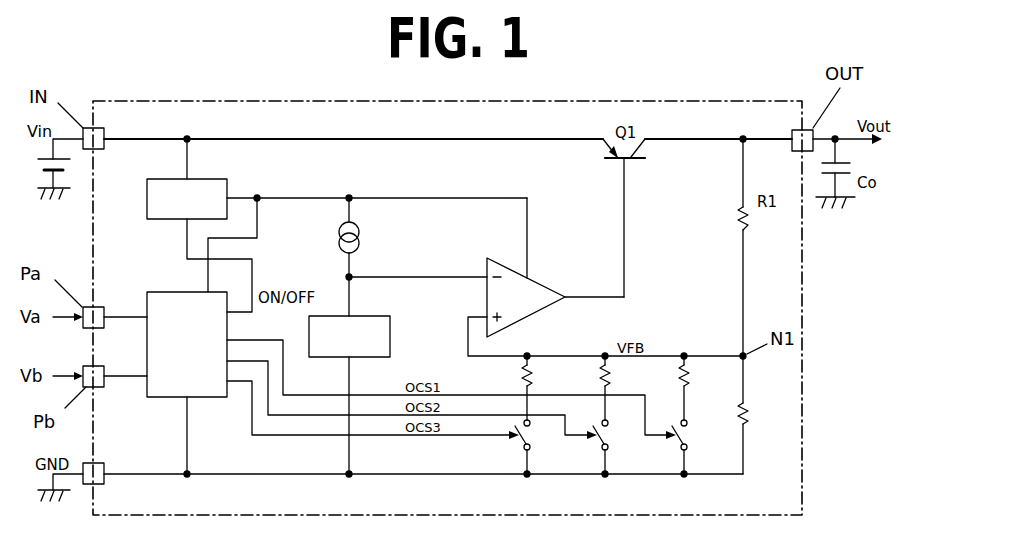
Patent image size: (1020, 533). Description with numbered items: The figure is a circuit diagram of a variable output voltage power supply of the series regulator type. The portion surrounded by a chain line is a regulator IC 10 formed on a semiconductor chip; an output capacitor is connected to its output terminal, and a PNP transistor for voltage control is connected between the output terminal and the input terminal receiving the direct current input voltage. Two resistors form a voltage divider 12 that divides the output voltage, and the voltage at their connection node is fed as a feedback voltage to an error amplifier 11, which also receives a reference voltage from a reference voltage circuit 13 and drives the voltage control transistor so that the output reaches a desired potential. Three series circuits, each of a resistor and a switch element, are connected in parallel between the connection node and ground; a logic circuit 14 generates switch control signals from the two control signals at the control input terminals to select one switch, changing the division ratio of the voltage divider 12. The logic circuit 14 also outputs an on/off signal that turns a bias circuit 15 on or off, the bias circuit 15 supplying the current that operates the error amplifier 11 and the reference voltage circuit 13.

The regulator IC 10 is at (673, 100).
The error amplifier 11 is at (542, 281).
The voltage divider 12 is at (766, 447).
The reference voltage circuit 13 is at (392, 332).
The logic circuit 14 is at (170, 290).
The bias circuit 15 is at (228, 189).